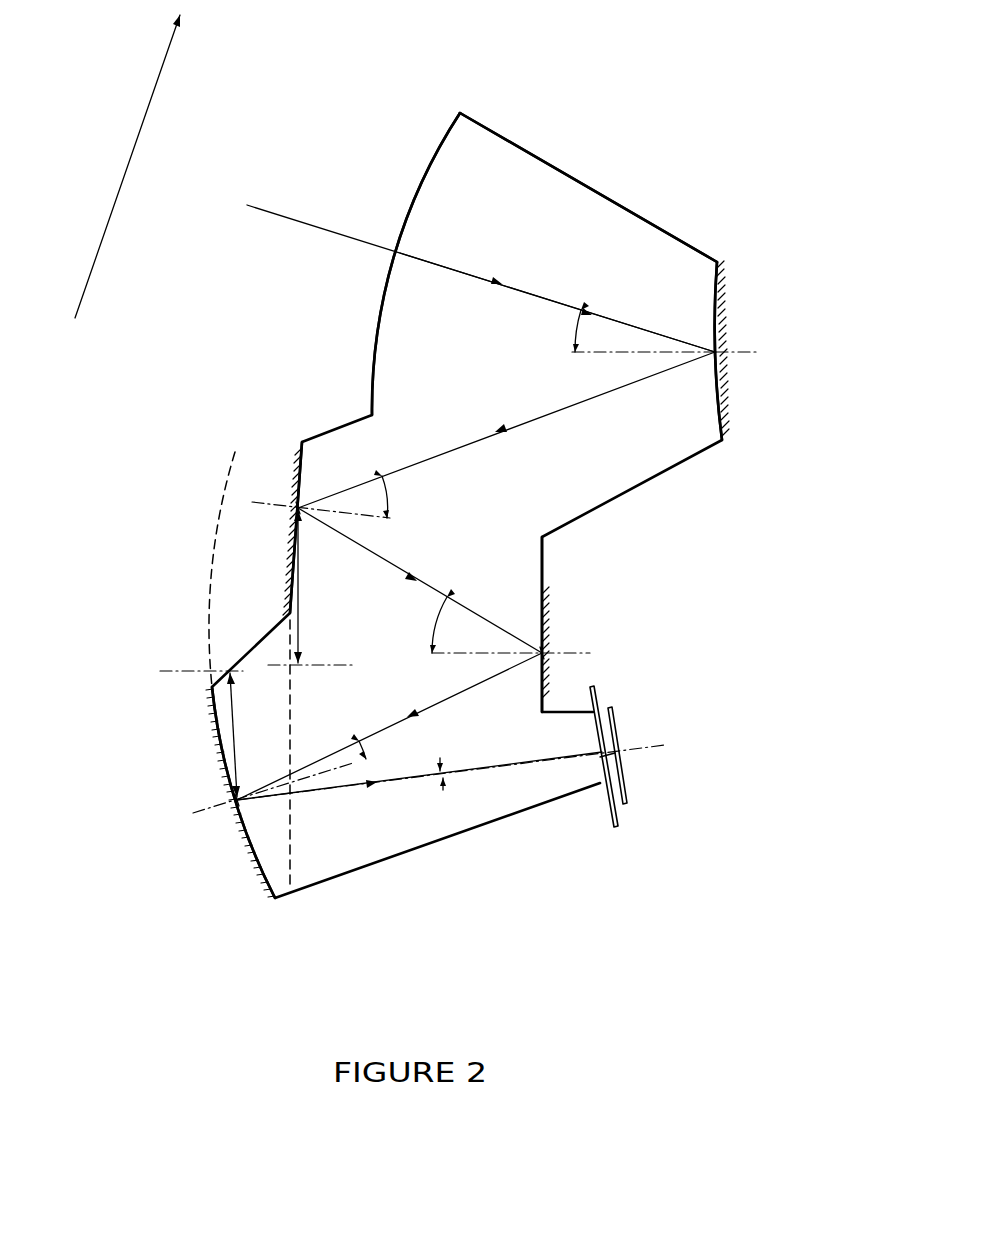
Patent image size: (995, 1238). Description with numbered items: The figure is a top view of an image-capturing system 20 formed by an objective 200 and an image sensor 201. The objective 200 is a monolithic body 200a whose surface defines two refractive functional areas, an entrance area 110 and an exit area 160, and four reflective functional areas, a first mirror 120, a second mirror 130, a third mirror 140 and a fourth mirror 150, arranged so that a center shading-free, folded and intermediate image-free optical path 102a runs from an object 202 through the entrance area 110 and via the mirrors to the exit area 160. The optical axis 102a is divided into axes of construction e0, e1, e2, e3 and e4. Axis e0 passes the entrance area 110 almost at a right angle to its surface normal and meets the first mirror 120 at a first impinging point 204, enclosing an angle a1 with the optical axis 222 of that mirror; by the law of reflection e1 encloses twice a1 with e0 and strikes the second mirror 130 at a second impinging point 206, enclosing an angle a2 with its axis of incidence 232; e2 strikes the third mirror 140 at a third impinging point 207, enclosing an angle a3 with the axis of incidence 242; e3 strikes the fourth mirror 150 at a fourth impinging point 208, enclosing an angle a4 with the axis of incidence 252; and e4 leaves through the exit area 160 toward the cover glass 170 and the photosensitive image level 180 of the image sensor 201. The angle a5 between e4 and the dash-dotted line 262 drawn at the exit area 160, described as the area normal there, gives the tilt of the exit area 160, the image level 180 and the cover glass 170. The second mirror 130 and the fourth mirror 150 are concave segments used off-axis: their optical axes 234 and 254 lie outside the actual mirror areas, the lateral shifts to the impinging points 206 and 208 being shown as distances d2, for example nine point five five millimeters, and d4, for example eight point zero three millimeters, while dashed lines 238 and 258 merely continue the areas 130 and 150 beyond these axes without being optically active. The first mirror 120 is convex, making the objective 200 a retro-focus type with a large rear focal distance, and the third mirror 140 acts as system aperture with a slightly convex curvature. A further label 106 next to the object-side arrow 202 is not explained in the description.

The image-capturing system 20 is at (852, 140).
The objective 200 is at (543, 148).
The monolithic body 200a is at (607, 195).
The entrance area 110 is at (405, 225).
The first mirror 120 is at (723, 323).
The second mirror 130 is at (302, 442).
The third mirror 140 is at (550, 603).
The fourth mirror 150 is at (256, 862).
The exit area 160 is at (602, 783).
The cover glass 170 is at (622, 823).
The image level 180 is at (620, 740).
The image sensor 201 is at (643, 855).
The object 202 is at (128, 163).
The object space 106 is at (125, 367).
The optical path 102a is at (312, 227).
The first impinging point 204 is at (727, 343).
The optical axis of the first mirror 222 is at (757, 353).
The second impinging point 206 is at (295, 497).
The axis of incidence of the second mirror 232 is at (257, 503).
The optical axis of the second mirror 234 is at (307, 665).
The dashed line 258 is at (212, 558).
The third impinging point 207 is at (550, 653).
The axis of incidence of the third mirror 242 is at (588, 653).
The optical axis of the fourth mirror 254 is at (170, 673).
The axis of incidence of the fourth mirror 252 is at (193, 813).
The fourth impinging point 208 is at (237, 805).
The dashed line 238 is at (288, 862).
The exit axis 262 is at (663, 747).
The first axis of construction e0 is at (497, 282).
The second axis of construction e1 is at (528, 417).
The third axis of construction e2 is at (482, 603).
The fourth axis of construction e3 is at (447, 698).
The fifth axis of construction e4 is at (497, 766).
The lateral shift distance d2 is at (313, 586).
The distance d4 is at (247, 735).
The tilt angle of the first mirror a1 is at (593, 330).
The tilt angle of the second mirror a2 is at (372, 496).
The tilt angle of the third mirror a3 is at (446, 621).
The tilt angle of the fourth mirror a4 is at (362, 747).
The tilt angle of the exit area a5 is at (441, 787).